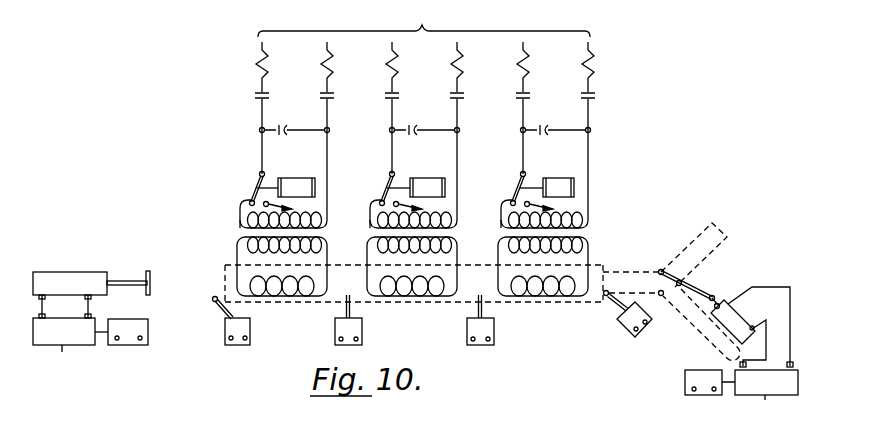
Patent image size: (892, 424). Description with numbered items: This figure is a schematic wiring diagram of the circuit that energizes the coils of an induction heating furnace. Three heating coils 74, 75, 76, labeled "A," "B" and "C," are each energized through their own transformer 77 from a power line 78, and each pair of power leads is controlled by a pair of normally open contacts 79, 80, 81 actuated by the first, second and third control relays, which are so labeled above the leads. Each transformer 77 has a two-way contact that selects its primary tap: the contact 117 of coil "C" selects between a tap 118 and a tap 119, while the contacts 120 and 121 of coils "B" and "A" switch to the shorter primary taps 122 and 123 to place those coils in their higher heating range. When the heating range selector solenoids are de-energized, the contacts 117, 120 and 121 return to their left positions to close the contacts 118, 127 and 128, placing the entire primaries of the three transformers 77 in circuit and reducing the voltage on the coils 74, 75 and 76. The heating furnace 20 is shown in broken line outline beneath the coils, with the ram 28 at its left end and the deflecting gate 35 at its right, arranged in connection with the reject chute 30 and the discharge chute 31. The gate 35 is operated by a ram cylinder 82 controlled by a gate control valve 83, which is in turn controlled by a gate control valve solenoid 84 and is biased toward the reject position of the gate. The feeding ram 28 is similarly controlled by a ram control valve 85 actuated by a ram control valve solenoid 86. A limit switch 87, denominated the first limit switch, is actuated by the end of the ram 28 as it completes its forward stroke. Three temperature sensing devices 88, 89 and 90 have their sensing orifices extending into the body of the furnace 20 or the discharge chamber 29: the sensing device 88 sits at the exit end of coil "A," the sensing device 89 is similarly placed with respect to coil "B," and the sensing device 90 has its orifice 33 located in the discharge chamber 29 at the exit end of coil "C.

The power line 78 is at (424, 24).
The normally open contacts 79 is at (322, 90).
The normally open contacts 80 is at (453, 90).
The normally open contacts 81 is at (585, 90).
The transformer 77 is at (236, 229).
The two-way contact 121 is at (258, 180).
The contact 128 is at (254, 195).
The shorter primary tap 123 is at (283, 207).
The two-way contact 120 is at (388, 181).
The contact 127 is at (383, 200).
The shorter primary tap 122 is at (413, 207).
The two-way contact 117 is at (519, 181).
The tap 118 is at (516, 203).
The tap 119 is at (545, 207).
The heating coil 74 is at (231, 276).
The heating coil 75 is at (376, 276).
The heating coil 76 is at (501, 276).
The heating furnace 20 is at (327, 306).
The ram 28 is at (112, 277).
The ram control valve 85 is at (70, 347).
The ram control valve solenoid 86 is at (130, 347).
The limit switch 87 is at (233, 346).
The temperature sensing device 88 is at (363, 333).
The temperature sensing device 89 is at (494, 333).
The discharge chamber 29 is at (606, 271).
The reject chute 30 is at (723, 236).
The discharge chute 31 is at (708, 341).
The orifice 33 is at (605, 298).
The deflecting gate 35 is at (686, 283).
The ram cylinder 82 is at (736, 308).
The gate control valve 83 is at (760, 396).
The gate control valve solenoid 84 is at (713, 396).
The temperature sensing device 90 is at (649, 321).